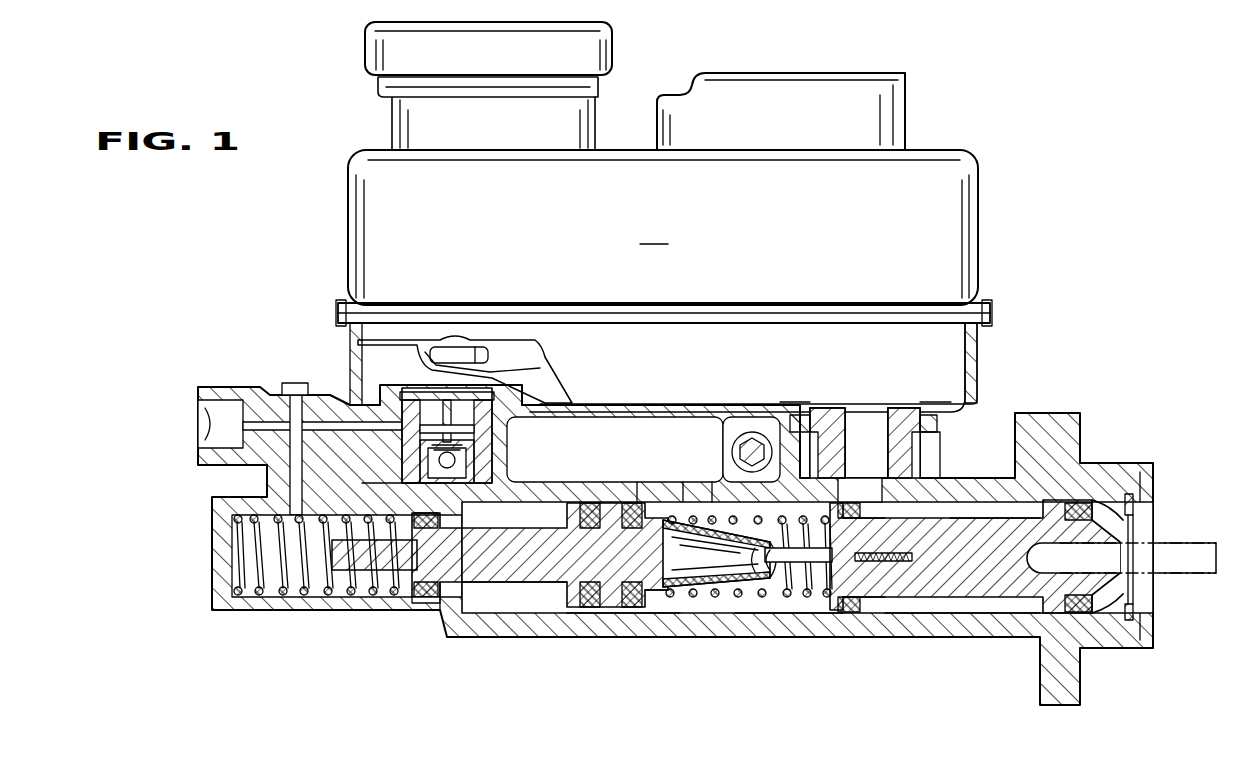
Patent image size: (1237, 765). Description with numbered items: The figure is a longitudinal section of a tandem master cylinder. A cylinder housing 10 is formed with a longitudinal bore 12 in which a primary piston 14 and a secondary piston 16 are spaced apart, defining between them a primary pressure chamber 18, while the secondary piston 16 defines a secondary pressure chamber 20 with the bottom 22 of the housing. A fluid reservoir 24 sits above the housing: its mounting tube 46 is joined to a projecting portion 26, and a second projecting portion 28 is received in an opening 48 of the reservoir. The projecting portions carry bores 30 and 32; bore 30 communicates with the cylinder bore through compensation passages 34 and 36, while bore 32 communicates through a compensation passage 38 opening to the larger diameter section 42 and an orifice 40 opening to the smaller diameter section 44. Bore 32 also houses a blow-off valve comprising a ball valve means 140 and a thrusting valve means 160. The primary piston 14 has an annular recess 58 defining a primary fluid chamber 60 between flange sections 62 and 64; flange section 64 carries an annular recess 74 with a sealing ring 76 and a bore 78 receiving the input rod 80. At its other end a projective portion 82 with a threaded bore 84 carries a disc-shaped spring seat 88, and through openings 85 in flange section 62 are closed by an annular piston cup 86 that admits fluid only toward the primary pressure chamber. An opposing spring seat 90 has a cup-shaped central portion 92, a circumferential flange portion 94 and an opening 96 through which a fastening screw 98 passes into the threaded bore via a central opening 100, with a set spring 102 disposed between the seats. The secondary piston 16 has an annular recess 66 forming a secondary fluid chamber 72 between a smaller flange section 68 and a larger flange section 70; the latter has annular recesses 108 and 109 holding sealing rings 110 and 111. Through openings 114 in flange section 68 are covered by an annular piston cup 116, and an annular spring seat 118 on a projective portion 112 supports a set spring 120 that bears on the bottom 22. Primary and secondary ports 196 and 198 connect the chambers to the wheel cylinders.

The cylinder housing 10 is at (943, 465).
The longitudinal bore 12 is at (752, 600).
The primary piston 14 is at (966, 585).
The secondary piston 16 is at (545, 580).
The primary pressure chamber 18 is at (808, 606).
The secondary pressure chamber 20 is at (293, 592).
The bottom 22 is at (217, 566).
The fluid reservoir 24 is at (664, 217).
The projecting portion 26 is at (953, 413).
The projecting portion 28 is at (262, 408).
The bore 30 is at (893, 430).
The bore 32 is at (537, 413).
The compensation passage 34 is at (988, 479).
The compensation passage 36 is at (845, 477).
The compensation passage 38 is at (468, 502).
The orifice 40 is at (348, 490).
The larger diameter section 42 is at (595, 613).
The smaller diameter section 44 is at (340, 592).
The mounting tube 46 is at (838, 433).
The opening 48 is at (352, 377).
The annular recess 58 is at (992, 562).
The primary fluid chamber 60 is at (931, 614).
The flange section 62 is at (866, 602).
The flange section 64 is at (1110, 607).
The annular recess 66 is at (486, 585).
The flange section 68 is at (437, 613).
The flange section 70 is at (628, 640).
The secondary fluid chamber 72 is at (520, 627).
The annular recess 74 is at (1130, 496).
The sealing ring 76 is at (1078, 500).
The bore 78 is at (1088, 572).
The input rod 80 is at (1178, 547).
The projective portion 82 is at (840, 612).
The threaded bore 84 is at (895, 566).
The through openings 85 is at (851, 613).
The annular piston cup 86 is at (927, 448).
The spring seat 88 is at (812, 445).
The spring seat 90 is at (690, 515).
The cup-shaped central portion 92 is at (723, 590).
The circumferential flange portion 94 is at (701, 590).
The opening 96 is at (775, 565).
The fastening screw 98 is at (782, 560).
The central opening 100 is at (752, 432).
The set spring 102 is at (712, 502).
The annular recess 108 is at (592, 610).
The annular recess 109 is at (634, 608).
The sealing ring 110 is at (562, 483).
The sealing ring 111 is at (638, 488).
The projective portion 112 is at (381, 572).
The through openings 114 is at (441, 600).
The annular piston cup 116 is at (413, 601).
The annular spring seat 118 is at (417, 527).
The set spring 120 is at (303, 505).
The ball valve means 140 is at (404, 396).
The thrusting valve means 160 is at (428, 374).
The primary port 196 is at (683, 612).
The secondary port 198 is at (205, 423).